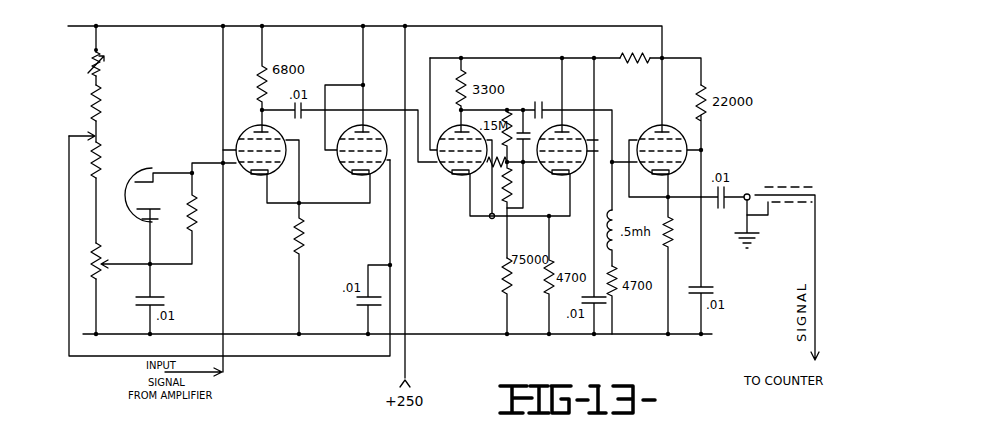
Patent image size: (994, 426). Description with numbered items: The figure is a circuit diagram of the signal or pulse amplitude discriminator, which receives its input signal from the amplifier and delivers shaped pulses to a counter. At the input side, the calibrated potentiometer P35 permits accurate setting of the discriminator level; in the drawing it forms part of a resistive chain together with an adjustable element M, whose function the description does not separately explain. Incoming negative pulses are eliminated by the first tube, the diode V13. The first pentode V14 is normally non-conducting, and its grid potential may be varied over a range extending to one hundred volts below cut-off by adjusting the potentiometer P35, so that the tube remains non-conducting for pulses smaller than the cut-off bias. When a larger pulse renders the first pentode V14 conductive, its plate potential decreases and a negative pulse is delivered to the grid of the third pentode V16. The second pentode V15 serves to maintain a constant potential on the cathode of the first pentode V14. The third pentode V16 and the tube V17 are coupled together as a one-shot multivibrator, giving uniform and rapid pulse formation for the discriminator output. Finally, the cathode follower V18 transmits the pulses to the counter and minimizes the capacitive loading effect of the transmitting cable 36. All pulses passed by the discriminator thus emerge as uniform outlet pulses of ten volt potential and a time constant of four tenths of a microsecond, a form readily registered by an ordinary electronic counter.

The transmitting cable 36 is at (794, 187).
The diode V13 is at (158, 208).
The first pentode V14 is at (267, 158).
The second pentode V15 is at (367, 158).
The third pentode V16 is at (467, 158).
The pentode of one-shot multivibrator V17 is at (567, 158).
The cathode follower V18 is at (667, 159).
The variable resistor M is at (102, 58).
The calibrated potentiometer P35 is at (99, 131).